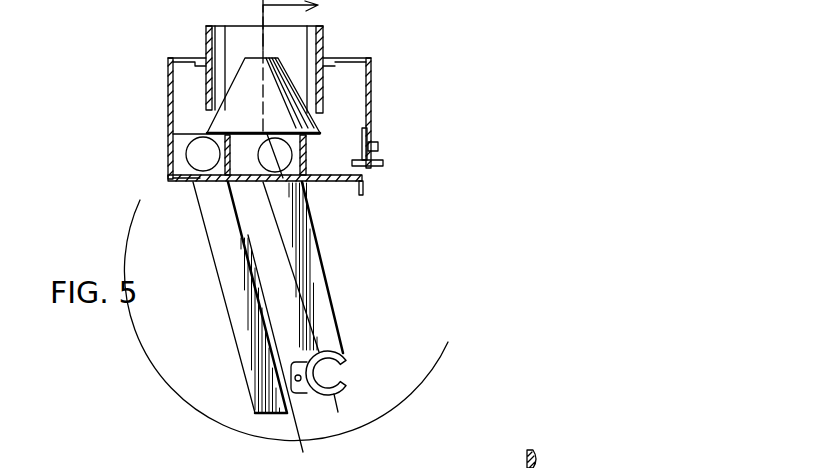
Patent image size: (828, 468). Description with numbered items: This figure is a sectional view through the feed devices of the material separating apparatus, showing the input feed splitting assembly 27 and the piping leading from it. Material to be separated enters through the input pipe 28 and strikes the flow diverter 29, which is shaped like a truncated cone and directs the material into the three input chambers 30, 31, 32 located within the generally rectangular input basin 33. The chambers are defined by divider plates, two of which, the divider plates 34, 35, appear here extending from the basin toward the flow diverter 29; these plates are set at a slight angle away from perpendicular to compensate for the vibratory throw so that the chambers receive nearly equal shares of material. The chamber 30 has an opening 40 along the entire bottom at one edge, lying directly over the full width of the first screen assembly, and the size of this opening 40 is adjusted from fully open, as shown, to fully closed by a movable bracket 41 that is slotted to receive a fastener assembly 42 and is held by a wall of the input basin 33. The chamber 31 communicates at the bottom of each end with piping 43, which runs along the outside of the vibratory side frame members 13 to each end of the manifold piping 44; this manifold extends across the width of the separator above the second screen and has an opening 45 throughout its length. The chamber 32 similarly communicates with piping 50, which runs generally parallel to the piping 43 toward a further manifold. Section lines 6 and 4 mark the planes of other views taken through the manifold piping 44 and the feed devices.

The dispensing head assembly 27 is at (182, 45).
The cylindrical sleeve 28 is at (325, 52).
The conical deflector 29 is at (318, 128).
The right partition 30 is at (339, 155).
The rod 31 is at (259, 155).
The left partition 32 is at (207, 122).
The side wall 33 is at (167, 143).
The bottom plate 34 is at (365, 173).
The plate flange 35 is at (197, 181).
The hook lip 40 is at (367, 176).
The angle bracket 41 is at (372, 160).
The screw 42 is at (380, 147).
The support arm 43 is at (318, 287).
The clamp ring 44 is at (352, 367).
The base plate edge 45 is at (287, 420).
The support leg 50 is at (240, 308).
The section line 6- 6 is at (248, 235).
The section line 4- 4 is at (338, 412).
The adjacent element 13 is at (540, 463).